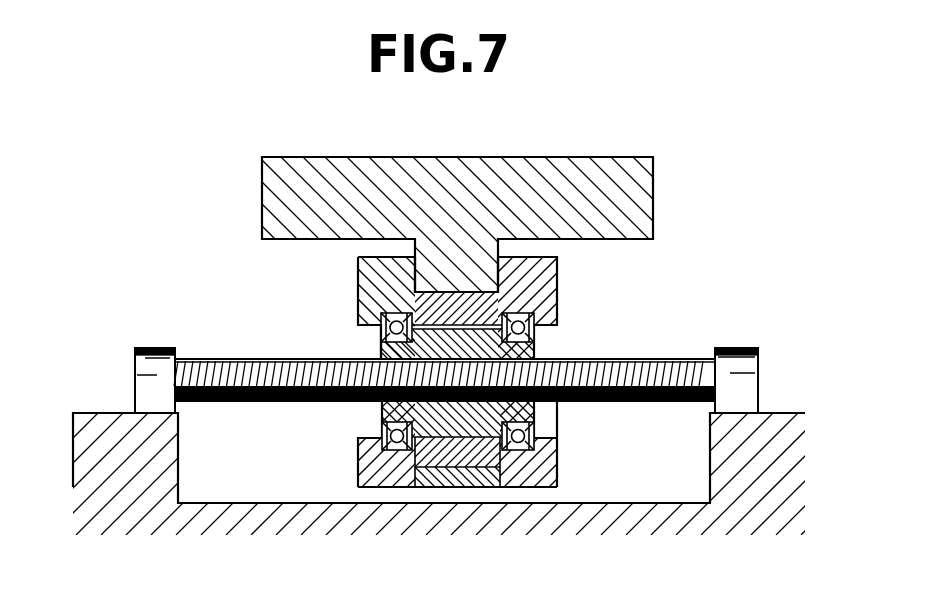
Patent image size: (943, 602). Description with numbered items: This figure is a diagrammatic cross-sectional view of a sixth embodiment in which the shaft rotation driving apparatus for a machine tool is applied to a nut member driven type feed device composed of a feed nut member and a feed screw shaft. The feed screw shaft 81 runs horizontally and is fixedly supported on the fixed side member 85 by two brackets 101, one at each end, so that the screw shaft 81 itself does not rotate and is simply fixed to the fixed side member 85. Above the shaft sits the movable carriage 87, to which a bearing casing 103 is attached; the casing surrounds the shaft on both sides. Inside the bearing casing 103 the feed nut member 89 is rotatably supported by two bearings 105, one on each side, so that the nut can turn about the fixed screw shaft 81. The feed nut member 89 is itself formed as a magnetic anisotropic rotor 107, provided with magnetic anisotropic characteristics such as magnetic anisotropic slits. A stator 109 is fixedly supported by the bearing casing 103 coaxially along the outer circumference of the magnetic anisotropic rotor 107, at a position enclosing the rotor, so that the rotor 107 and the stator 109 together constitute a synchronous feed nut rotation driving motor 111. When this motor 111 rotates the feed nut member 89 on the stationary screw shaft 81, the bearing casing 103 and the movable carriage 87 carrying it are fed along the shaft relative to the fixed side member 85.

The feed screw shaft 81 is at (651, 366).
The fixed side member 85 is at (778, 414).
The movable carriage 87 is at (504, 157).
The feed nut member 89 is at (537, 410).
The bracket 101 is at (148, 349).
The bearing casing 103 is at (533, 275).
The bearing 105 is at (536, 333).
The magnetic anisotropic rotor 107 is at (442, 468).
The stator 109 is at (483, 463).
The synchronous feed nut rotation driving motor 111 is at (374, 343).